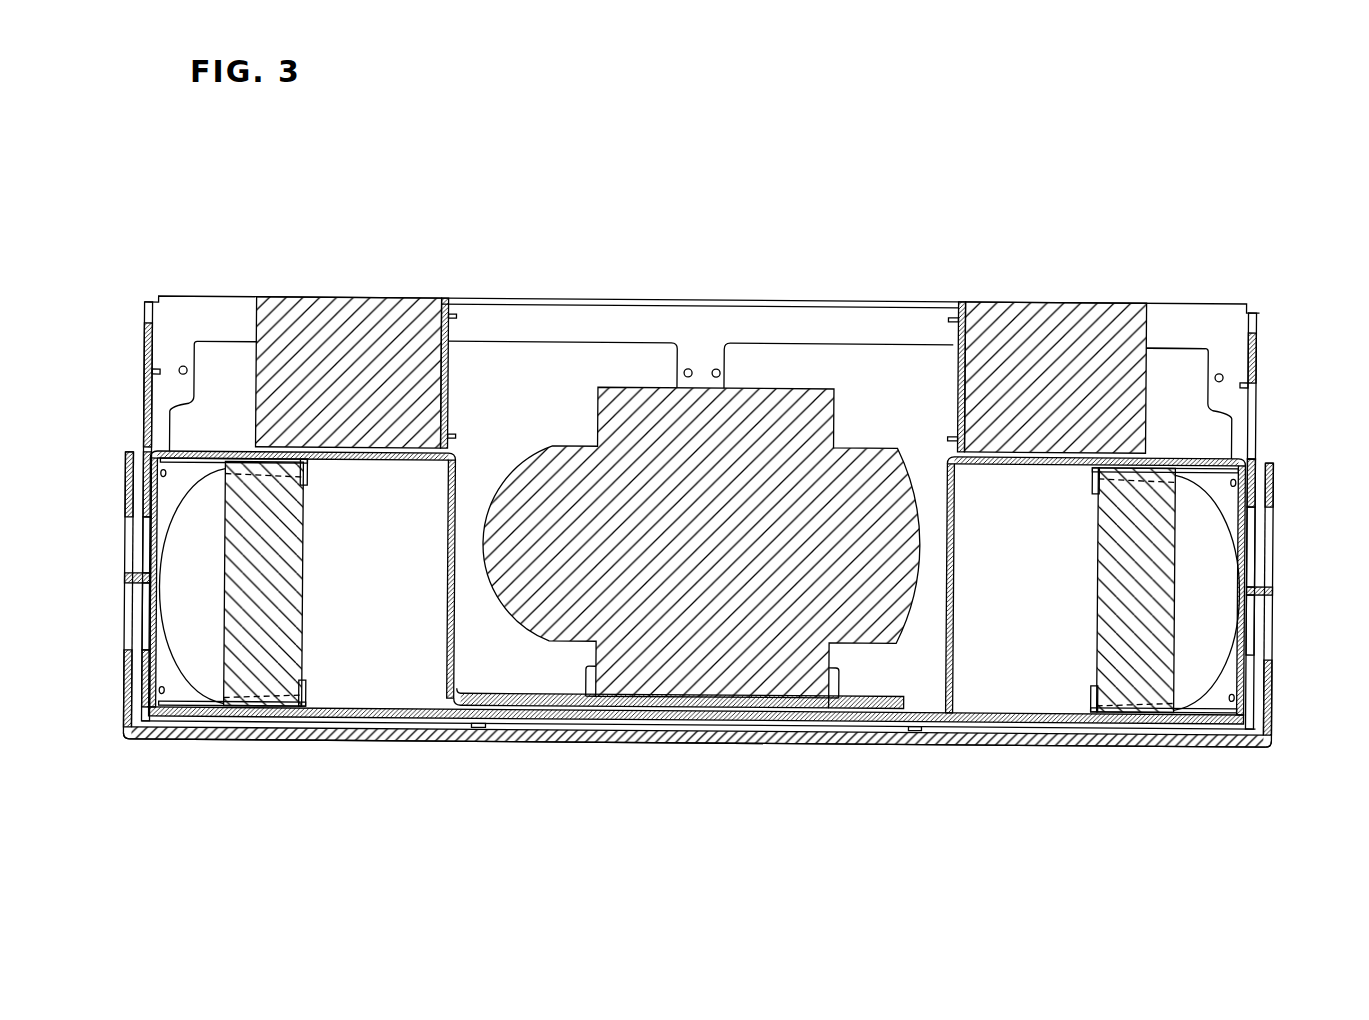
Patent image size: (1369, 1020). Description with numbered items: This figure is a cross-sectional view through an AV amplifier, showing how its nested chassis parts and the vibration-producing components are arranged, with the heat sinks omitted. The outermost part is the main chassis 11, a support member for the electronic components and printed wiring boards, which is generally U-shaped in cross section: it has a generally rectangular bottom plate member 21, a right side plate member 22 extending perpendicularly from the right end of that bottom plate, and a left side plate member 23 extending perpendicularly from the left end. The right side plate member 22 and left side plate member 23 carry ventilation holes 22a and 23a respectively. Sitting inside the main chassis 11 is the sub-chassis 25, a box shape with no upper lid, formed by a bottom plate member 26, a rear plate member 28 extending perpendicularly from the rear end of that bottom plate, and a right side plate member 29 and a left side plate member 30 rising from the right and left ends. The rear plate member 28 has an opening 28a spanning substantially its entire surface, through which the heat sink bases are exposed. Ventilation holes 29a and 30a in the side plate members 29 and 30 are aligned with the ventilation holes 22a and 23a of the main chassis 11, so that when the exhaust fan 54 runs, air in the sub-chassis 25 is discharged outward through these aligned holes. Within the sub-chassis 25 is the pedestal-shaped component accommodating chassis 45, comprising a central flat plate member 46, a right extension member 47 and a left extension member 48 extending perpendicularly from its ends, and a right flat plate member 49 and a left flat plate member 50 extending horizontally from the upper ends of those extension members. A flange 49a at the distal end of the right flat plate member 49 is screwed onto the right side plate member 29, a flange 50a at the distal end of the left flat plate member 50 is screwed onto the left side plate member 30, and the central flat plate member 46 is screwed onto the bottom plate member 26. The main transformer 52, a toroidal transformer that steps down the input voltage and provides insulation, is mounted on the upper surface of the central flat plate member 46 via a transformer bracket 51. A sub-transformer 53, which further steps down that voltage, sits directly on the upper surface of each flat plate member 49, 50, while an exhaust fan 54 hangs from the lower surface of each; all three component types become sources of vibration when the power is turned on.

The main chassis 11 is at (1268, 746).
The bottom plate member 21 is at (550, 744).
The right side plate member 22 is at (1273, 703).
The ventilation holes 22a is at (1273, 587).
The left side plate member 23 is at (130, 698).
The ventilation holes 23a is at (133, 578).
The sub-chassis 25 is at (1262, 356).
The bottom plate member 26 is at (765, 721).
The rear plate member 28 is at (720, 316).
The opening 28a is at (517, 378).
The right side plate member 29 is at (1262, 511).
The ventilation holes 29a is at (1270, 556).
The left side plate member 30 is at (145, 498).
The ventilation holes 30a is at (142, 546).
The component accommodating chassis 45 is at (1186, 452).
The central flat plate member 46 is at (490, 696).
The right extension member 47 is at (955, 569).
The left extension member 48 is at (446, 569).
The right flat plate member 49 is at (1045, 463).
The flange 49a is at (1258, 468).
The left flat plate member 50 is at (345, 463).
The flange 50a is at (157, 470).
The transformer bracket 51 is at (880, 695).
The main transformer 52 is at (834, 392).
The sub-transformer 53 is at (348, 320).
The exhaust fan 54 is at (262, 692).